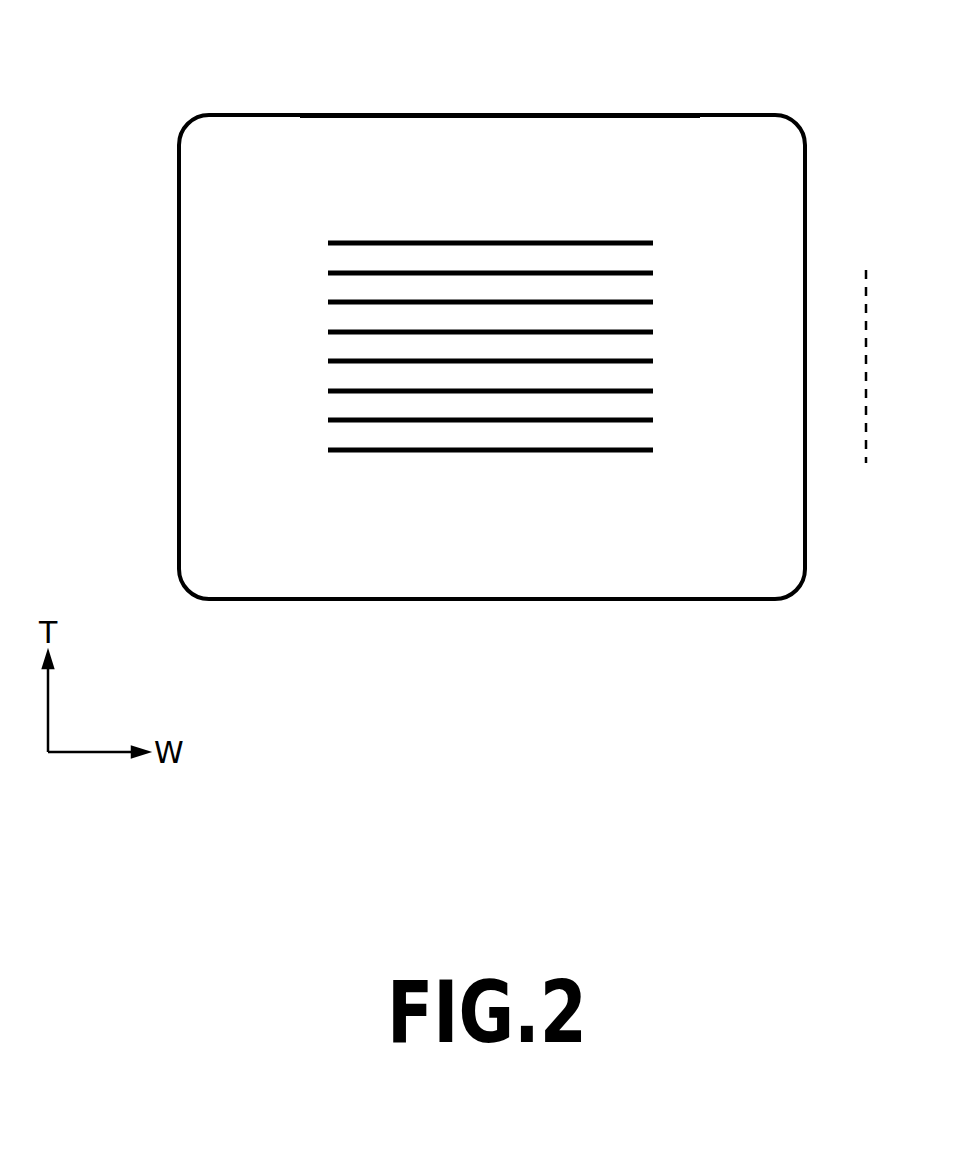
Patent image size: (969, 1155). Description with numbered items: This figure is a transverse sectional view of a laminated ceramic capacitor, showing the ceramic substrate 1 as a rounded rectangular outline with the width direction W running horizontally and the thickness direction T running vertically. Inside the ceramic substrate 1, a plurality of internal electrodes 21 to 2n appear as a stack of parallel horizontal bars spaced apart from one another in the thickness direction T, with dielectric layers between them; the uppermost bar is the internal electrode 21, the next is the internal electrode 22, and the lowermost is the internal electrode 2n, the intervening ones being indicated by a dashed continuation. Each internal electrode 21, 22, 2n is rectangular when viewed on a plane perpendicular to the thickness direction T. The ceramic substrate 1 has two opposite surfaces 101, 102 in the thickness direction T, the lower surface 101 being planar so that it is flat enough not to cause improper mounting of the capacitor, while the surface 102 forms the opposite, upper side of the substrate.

The ceramic substrate 1 is at (407, 137).
The surface 102 is at (613, 116).
The surface 101 is at (607, 600).
The internal electrode 21 is at (622, 243).
The internal electrode 22 is at (622, 273).
The internal electrode 2n is at (622, 452).